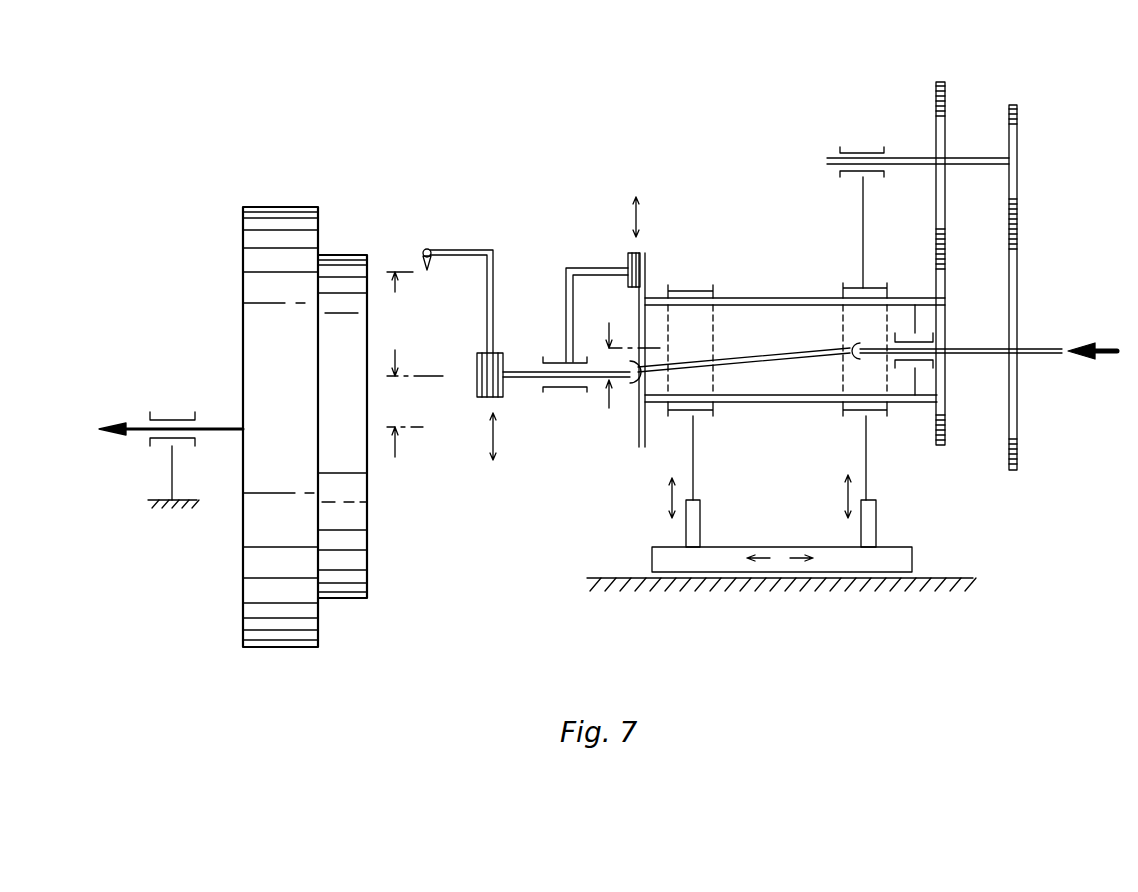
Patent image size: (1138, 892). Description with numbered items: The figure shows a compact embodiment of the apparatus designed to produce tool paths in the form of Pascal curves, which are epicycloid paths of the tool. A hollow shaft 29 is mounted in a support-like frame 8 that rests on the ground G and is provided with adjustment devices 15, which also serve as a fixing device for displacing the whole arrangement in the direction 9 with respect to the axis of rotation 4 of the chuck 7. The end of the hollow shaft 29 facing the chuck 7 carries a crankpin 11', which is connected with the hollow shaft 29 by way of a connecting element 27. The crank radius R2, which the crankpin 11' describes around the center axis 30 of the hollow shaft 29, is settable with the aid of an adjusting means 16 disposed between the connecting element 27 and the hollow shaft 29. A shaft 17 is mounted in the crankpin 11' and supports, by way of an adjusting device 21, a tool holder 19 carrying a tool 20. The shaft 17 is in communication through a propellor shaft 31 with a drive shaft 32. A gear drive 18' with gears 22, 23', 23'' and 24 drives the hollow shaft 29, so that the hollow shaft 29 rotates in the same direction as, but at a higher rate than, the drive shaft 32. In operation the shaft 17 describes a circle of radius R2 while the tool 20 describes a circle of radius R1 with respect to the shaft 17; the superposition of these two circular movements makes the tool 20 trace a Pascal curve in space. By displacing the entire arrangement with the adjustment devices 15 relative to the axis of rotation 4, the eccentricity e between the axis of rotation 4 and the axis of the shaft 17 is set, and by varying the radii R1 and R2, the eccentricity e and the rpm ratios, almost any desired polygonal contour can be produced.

The axis of rotation 4 is at (126, 423).
The chuck 7 is at (305, 399).
The support-like frame 8 is at (668, 560).
The displacement direction 9 is at (780, 560).
The crankpin 11' is at (555, 338).
The adjustment devices 15 is at (907, 515).
The adjusting means 16 is at (647, 263).
The shaft 17 is at (523, 382).
The gear drive 18' is at (980, 186).
The tool holder 19 is at (496, 287).
The tool 20 is at (423, 253).
The adjusting device 21 is at (492, 408).
The gear 22 is at (1049, 280).
The gear 23' is at (1040, 287).
The gear 23'' is at (911, 248).
The gear 24 is at (947, 423).
The connecting element 27 is at (585, 266).
The hollow shaft 29 is at (768, 298).
The center axis 30 is at (657, 349).
The propellor shaft 31 is at (741, 364).
The drive shaft 32 is at (1047, 343).
The ground G is at (166, 519).
The radius of the circular tool path R1 is at (413, 324).
The crank radius R2 is at (607, 360).
The eccentricity e is at (405, 420).